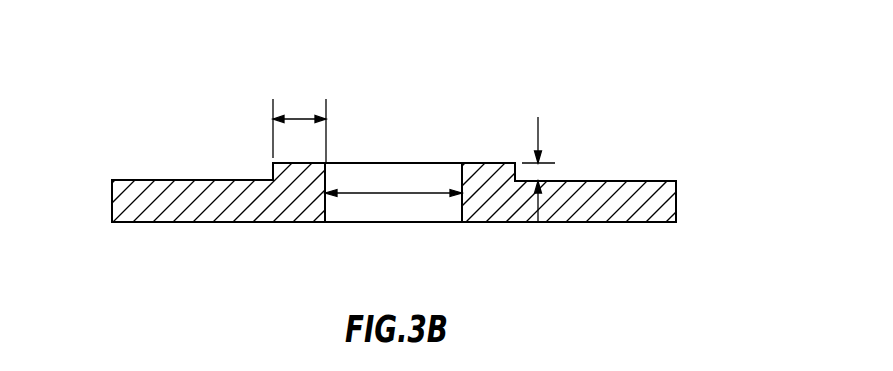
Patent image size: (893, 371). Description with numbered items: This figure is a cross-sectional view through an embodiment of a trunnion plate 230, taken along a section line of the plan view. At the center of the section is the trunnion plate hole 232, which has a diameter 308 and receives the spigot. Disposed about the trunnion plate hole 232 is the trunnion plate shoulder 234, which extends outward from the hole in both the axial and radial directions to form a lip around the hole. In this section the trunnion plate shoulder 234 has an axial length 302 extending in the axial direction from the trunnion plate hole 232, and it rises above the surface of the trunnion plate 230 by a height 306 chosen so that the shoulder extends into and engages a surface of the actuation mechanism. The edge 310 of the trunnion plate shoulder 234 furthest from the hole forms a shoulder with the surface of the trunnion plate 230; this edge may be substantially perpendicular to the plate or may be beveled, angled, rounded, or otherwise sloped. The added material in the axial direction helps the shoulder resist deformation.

The trunnion plate 230 is at (152, 214).
The trunnion plate hole 232 is at (419, 208).
The trunnion plate shoulder 234 is at (300, 162).
The axial length 302 is at (300, 116).
The height 306 is at (540, 127).
The diameter 308 is at (378, 192).
The edge 310 is at (287, 183).